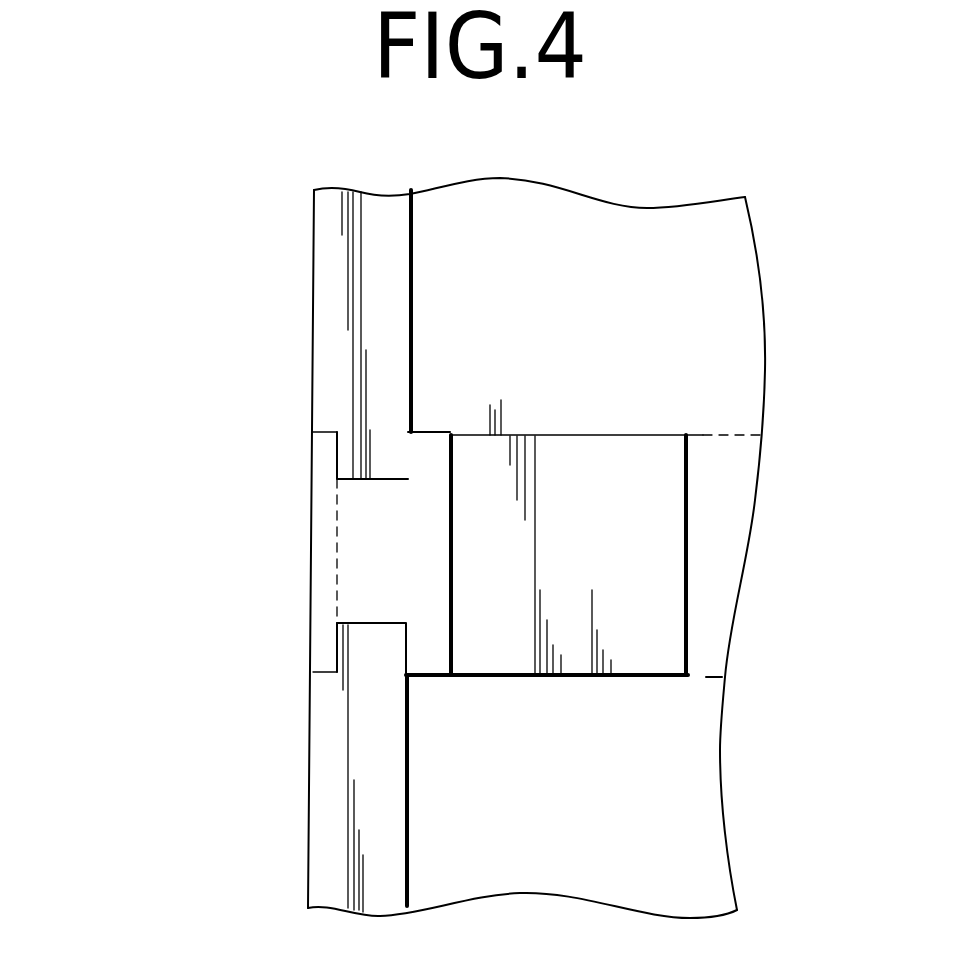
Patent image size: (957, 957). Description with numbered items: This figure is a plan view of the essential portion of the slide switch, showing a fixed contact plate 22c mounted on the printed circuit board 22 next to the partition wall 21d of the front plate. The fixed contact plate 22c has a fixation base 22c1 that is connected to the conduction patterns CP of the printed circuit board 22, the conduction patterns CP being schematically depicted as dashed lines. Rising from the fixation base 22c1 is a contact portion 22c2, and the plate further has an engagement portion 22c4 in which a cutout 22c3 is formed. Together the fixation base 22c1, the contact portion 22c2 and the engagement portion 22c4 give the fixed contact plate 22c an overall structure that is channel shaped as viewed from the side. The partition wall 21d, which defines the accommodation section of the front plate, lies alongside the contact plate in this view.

The printed circuit board 22 is at (620, 788).
The fixed contact plate 22c is at (527, 400).
The fixation base 22c1 is at (643, 553).
The contact portion 22c2 is at (313, 497).
The cutout 22c3 is at (377, 625).
The engagement portion 22c4 is at (397, 575).
The partition wall 21d is at (330, 857).
The conduction pattern CP is at (718, 480).